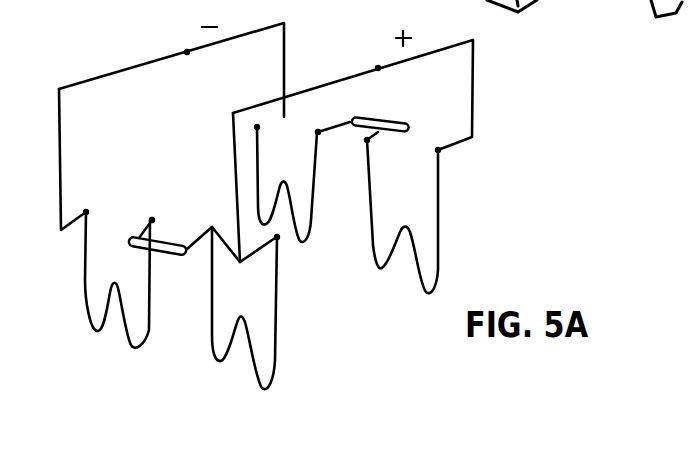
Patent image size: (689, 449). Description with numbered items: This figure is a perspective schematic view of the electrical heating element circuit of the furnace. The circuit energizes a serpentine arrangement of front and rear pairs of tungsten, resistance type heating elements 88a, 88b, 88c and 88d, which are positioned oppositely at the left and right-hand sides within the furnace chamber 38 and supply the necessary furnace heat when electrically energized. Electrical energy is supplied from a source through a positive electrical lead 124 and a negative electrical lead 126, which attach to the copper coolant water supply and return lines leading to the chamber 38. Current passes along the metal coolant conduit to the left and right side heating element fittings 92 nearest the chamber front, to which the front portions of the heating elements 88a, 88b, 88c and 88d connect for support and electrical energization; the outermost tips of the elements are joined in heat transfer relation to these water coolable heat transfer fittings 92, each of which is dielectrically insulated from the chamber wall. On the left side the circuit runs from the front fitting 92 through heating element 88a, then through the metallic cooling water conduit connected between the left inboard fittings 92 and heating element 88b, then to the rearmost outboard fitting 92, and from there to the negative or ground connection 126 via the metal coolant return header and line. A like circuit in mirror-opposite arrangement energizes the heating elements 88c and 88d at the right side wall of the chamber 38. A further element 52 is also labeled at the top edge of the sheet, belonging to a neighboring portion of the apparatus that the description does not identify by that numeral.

The negative electrical lead 126 is at (188, 50).
The positive electrical lead 124 is at (378, 68).
The chamber 38 is at (452, 0).
The housing 52 is at (572, 0).
The heating element 88a is at (277, 303).
The heating element 88b is at (133, 345).
The heating element 88c is at (438, 177).
The heating element 88d is at (318, 152).
The water coolable heat transfer fitting 92 is at (152, 218).